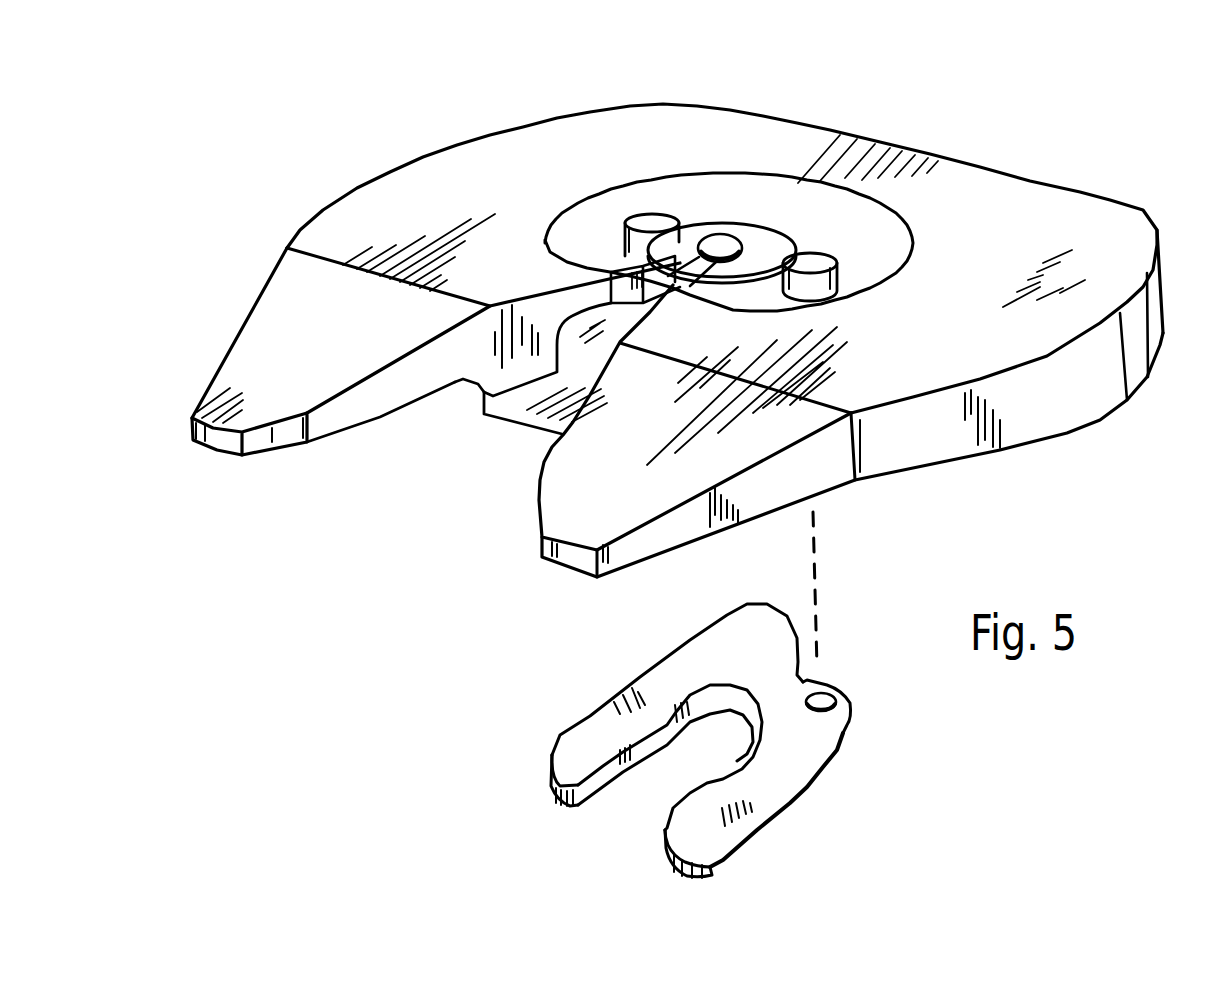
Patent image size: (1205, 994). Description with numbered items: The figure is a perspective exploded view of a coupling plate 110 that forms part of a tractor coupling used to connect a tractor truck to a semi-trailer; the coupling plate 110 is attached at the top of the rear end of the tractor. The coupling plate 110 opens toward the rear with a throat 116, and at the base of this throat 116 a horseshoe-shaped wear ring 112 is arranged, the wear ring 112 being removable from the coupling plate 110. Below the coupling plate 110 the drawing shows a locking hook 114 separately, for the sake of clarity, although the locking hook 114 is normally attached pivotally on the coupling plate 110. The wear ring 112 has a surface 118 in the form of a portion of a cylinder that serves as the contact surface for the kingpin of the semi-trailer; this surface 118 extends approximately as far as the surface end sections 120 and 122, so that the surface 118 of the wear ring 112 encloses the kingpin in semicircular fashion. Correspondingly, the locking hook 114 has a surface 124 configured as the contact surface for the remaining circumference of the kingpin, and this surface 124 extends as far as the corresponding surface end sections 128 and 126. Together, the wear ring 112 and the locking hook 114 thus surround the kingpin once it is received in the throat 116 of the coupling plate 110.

The coupling plate 110 is at (357, 173).
The wear ring 112 is at (708, 233).
The locking hook 114 is at (577, 765).
The throat 116 is at (543, 458).
The surface 118 is at (717, 273).
The surface end section 120 is at (703, 243).
The surface end section 122 is at (797, 244).
The surface 124 is at (746, 700).
The surface end section 126 is at (724, 765).
The surface end section 128 is at (663, 717).